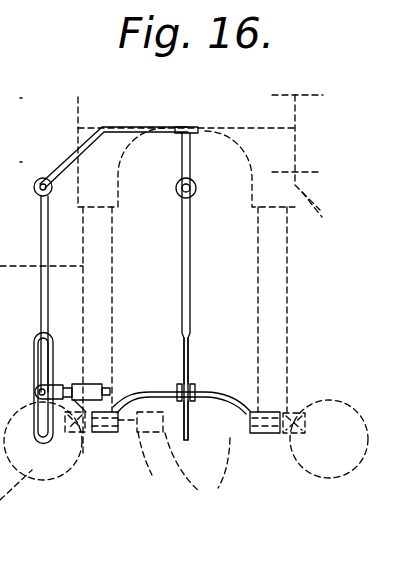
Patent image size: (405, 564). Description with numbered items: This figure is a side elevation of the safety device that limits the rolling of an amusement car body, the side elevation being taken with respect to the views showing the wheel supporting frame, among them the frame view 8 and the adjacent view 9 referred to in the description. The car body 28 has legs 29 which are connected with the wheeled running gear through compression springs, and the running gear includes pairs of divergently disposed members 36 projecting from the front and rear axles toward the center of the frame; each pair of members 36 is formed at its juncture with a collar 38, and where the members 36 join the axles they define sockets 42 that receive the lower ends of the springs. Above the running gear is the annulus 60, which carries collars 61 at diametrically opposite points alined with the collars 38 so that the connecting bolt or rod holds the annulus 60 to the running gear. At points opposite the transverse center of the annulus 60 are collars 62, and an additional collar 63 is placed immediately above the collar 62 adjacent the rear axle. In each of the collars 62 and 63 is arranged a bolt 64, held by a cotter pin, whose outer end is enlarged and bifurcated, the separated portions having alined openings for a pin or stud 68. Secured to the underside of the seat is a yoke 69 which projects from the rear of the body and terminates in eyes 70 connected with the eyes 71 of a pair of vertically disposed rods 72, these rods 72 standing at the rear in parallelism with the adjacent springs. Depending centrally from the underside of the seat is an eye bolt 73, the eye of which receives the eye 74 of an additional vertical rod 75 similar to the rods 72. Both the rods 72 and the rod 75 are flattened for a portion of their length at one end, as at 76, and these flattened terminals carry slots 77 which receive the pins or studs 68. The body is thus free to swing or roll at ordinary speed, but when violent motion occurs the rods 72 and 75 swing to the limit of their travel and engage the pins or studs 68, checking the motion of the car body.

The frame member 8 is at (20, 98).
The frame member 9 is at (20, 162).
The car body 28 is at (313, 97).
The legs 29 is at (313, 189).
The divergently disposed members 36 is at (151, 468).
The collar 38 is at (197, 469).
The sockets 42 is at (293, 412).
The annulus 60 is at (208, 393).
The collars 61 is at (265, 433).
The collars 62 is at (102, 432).
The additional collar 63 is at (87, 392).
The bolt 64 is at (110, 389).
The pin or stud 68 is at (46, 390).
The yoke 69 is at (190, 127).
The eyes 70 is at (192, 182).
The eyes 71 is at (190, 194).
The rods 72 is at (190, 277).
The eye bolt 73 is at (78, 152).
The eye 74 is at (34, 190).
The rod 75 is at (48, 246).
The flattened portion 76 is at (50, 337).
The slots 77 is at (38, 356).